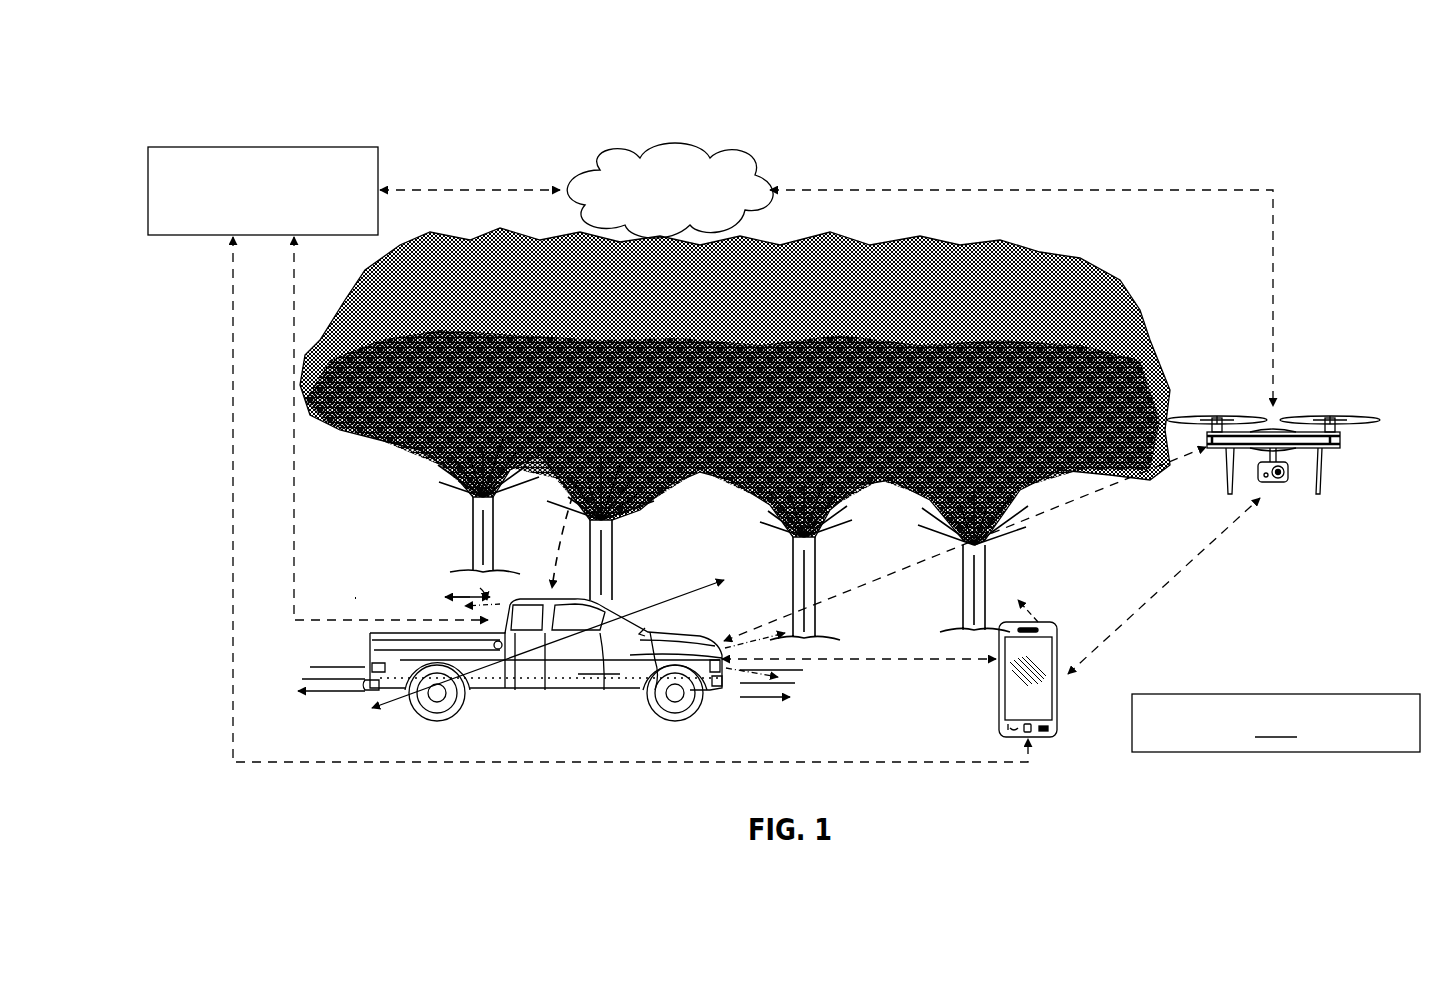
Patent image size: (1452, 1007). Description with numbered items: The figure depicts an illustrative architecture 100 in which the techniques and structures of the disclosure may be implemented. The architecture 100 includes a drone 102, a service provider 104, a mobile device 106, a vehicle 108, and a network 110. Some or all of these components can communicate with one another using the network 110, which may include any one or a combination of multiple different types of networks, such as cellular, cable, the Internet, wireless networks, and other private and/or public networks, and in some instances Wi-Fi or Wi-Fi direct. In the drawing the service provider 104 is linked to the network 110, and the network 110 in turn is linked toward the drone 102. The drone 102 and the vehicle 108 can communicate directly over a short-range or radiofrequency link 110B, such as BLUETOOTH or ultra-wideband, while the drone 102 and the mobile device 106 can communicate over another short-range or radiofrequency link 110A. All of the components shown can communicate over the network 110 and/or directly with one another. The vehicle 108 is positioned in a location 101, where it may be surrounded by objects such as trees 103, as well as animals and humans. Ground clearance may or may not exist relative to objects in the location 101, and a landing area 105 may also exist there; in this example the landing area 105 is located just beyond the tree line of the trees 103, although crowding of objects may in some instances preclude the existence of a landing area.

The architecture 100 is at (748, 409).
The location 101 is at (1049, 265).
The drone 102 is at (1295, 427).
The trees 103 is at (745, 434).
The service provider 104 is at (263, 175).
The landing area 105 is at (1276, 723).
The mobile device 106 is at (1064, 657).
The vehicle 108 is at (550, 650).
The network 110 is at (655, 182).
The short-range or radiofrequency link 110A is at (1158, 586).
The short-range or radiofrequency link 110B is at (964, 553).